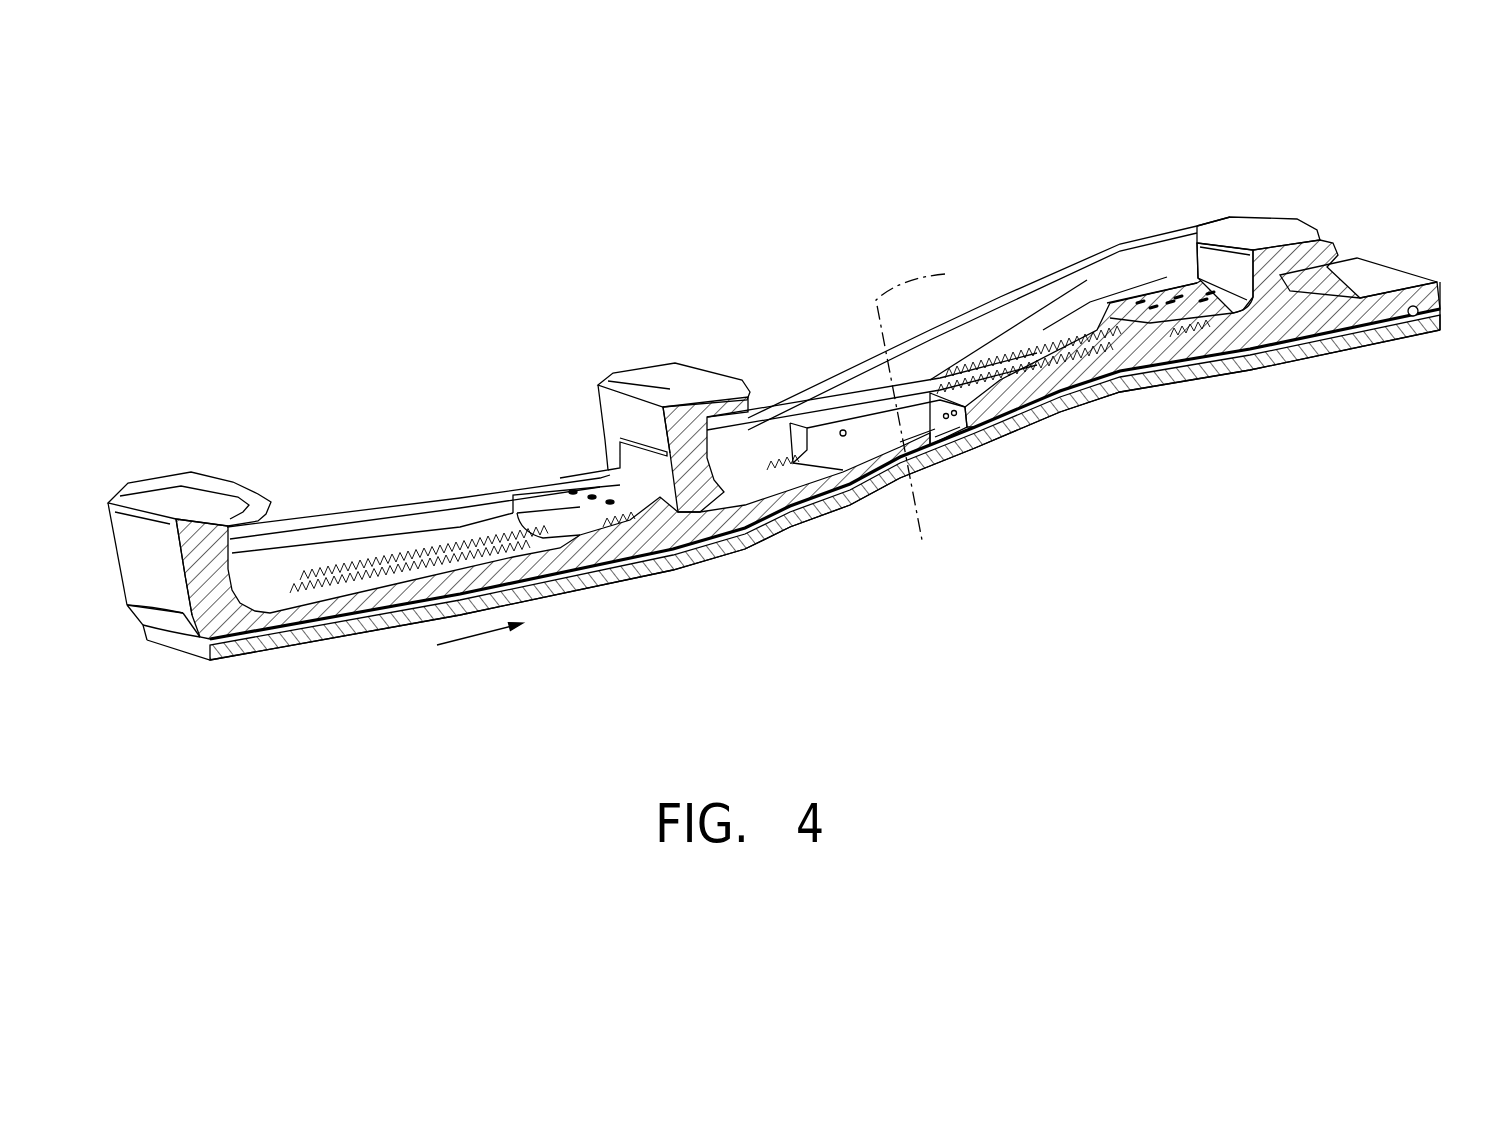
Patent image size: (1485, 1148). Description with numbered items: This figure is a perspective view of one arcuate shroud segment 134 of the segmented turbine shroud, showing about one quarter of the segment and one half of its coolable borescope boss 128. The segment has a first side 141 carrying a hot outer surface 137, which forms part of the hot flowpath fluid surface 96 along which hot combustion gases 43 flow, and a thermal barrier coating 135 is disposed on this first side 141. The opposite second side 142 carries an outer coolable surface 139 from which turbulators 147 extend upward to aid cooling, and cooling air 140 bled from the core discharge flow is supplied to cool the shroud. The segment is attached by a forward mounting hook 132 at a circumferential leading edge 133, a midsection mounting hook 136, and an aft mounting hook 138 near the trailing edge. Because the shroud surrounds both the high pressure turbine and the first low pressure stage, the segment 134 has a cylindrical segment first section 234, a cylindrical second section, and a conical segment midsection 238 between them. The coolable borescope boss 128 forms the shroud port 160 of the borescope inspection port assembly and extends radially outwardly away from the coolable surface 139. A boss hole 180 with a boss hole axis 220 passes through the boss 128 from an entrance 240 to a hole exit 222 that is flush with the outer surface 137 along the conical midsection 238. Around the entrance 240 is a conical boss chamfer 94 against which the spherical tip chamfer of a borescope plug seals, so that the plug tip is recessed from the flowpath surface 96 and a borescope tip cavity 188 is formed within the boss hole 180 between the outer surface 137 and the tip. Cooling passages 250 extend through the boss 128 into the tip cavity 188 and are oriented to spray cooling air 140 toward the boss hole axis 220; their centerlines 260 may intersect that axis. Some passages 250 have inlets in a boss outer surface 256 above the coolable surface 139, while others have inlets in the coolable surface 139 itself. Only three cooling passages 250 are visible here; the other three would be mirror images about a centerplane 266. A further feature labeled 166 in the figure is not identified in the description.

The hot combustion gases 43 is at (467, 645).
The conical boss chamfer 94 is at (937, 393).
The hot flowpath fluid surface 96 is at (950, 425).
The coolable borescope boss 128 is at (735, 527).
The forward mounting hook 132 is at (207, 487).
The circumferential leading edge 133 is at (172, 627).
The arcuate shroud segment 134 is at (1363, 260).
The thermal barrier coating 135 is at (1187, 387).
The midsection mounting hook 136 is at (670, 383).
The hot outer surface 137 is at (1403, 347).
The aft mounting hook 138 is at (1260, 225).
The outer coolable surface 139 is at (757, 440).
The cooling air 140 is at (1427, 317).
The first side 141 is at (548, 592).
The second side 142 is at (473, 560).
The turbulators 147 is at (390, 567).
The shroud port 160 is at (905, 420).
The ramp 166 is at (882, 475).
The boss hole 180 is at (932, 450).
The borescope tip cavity 188 is at (935, 447).
The boss hole axis 220 is at (934, 398).
The hole exit 222 is at (958, 445).
The cylindrical segment first section 234 is at (340, 642).
The conical segment midsection 238 is at (790, 420).
The entrance 240 is at (857, 410).
The cooling passages 250 is at (843, 430).
The boss outer surface 256 is at (795, 445).
The centerlines 260 is at (1094, 320).
The centerplane 266 is at (676, 556).